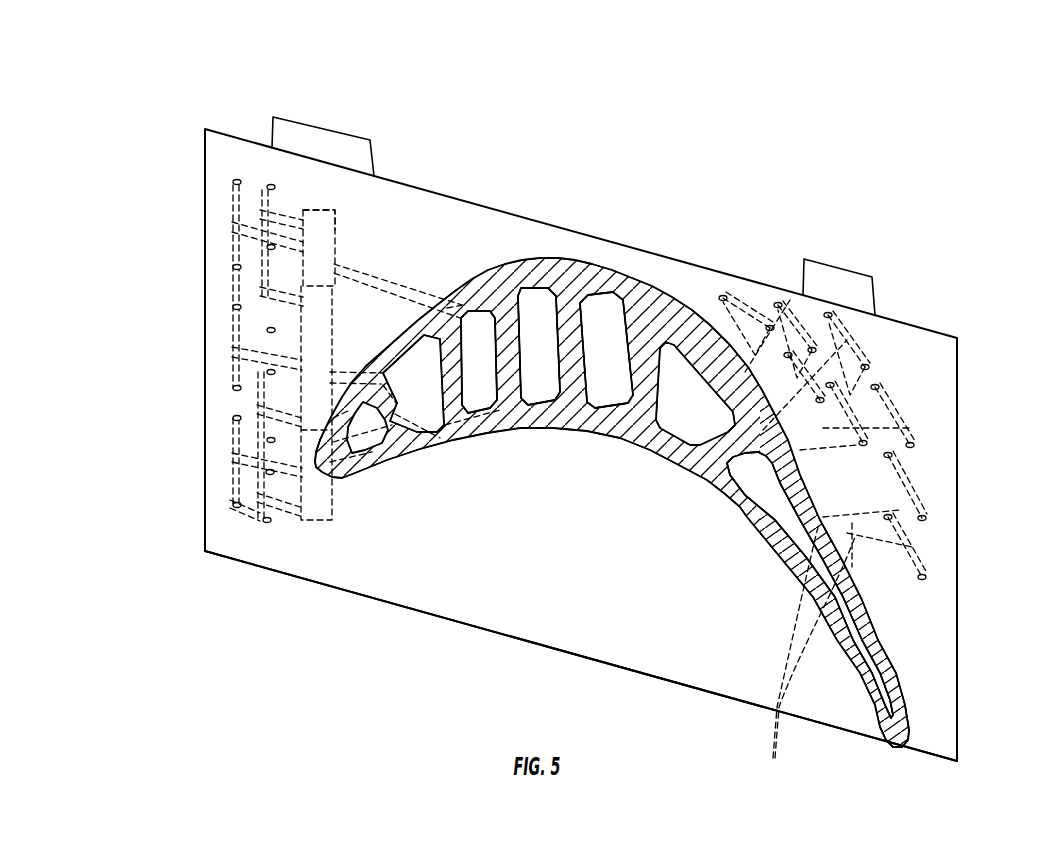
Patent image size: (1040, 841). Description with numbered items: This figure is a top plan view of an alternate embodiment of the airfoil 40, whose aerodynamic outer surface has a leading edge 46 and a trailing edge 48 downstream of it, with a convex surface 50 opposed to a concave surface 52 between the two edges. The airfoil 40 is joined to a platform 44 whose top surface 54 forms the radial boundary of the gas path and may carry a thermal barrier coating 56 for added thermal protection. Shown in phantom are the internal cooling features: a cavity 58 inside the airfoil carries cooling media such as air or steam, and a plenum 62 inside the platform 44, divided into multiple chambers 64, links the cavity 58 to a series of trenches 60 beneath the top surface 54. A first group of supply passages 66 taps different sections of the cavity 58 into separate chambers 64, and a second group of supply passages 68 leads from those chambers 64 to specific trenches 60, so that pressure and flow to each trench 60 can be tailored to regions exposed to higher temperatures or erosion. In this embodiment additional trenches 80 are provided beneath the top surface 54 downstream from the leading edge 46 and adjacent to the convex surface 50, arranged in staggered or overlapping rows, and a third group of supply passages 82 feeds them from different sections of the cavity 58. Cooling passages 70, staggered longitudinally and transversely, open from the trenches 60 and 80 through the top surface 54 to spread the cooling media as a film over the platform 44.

The airfoil 40 is at (949, 243).
The platform 44 is at (957, 384).
The leading edge 46 is at (314, 470).
The trailing edge 48 is at (903, 745).
The convex surface 50 is at (712, 337).
The concave surface 52 is at (735, 502).
The top surface 54 is at (446, 556).
The thermal barrier coating 56 is at (234, 285).
The cavity 58 is at (600, 293).
The trenches 60 is at (240, 508).
The plenum 62 is at (335, 227).
The chambers 64 is at (322, 208).
The first group of supply passages 66 is at (337, 384).
The second group of supply passages 68 is at (247, 213).
The cooling passages 70 is at (233, 268).
The trenches 80 is at (907, 418).
The third group of supply passages 82 is at (808, 655).